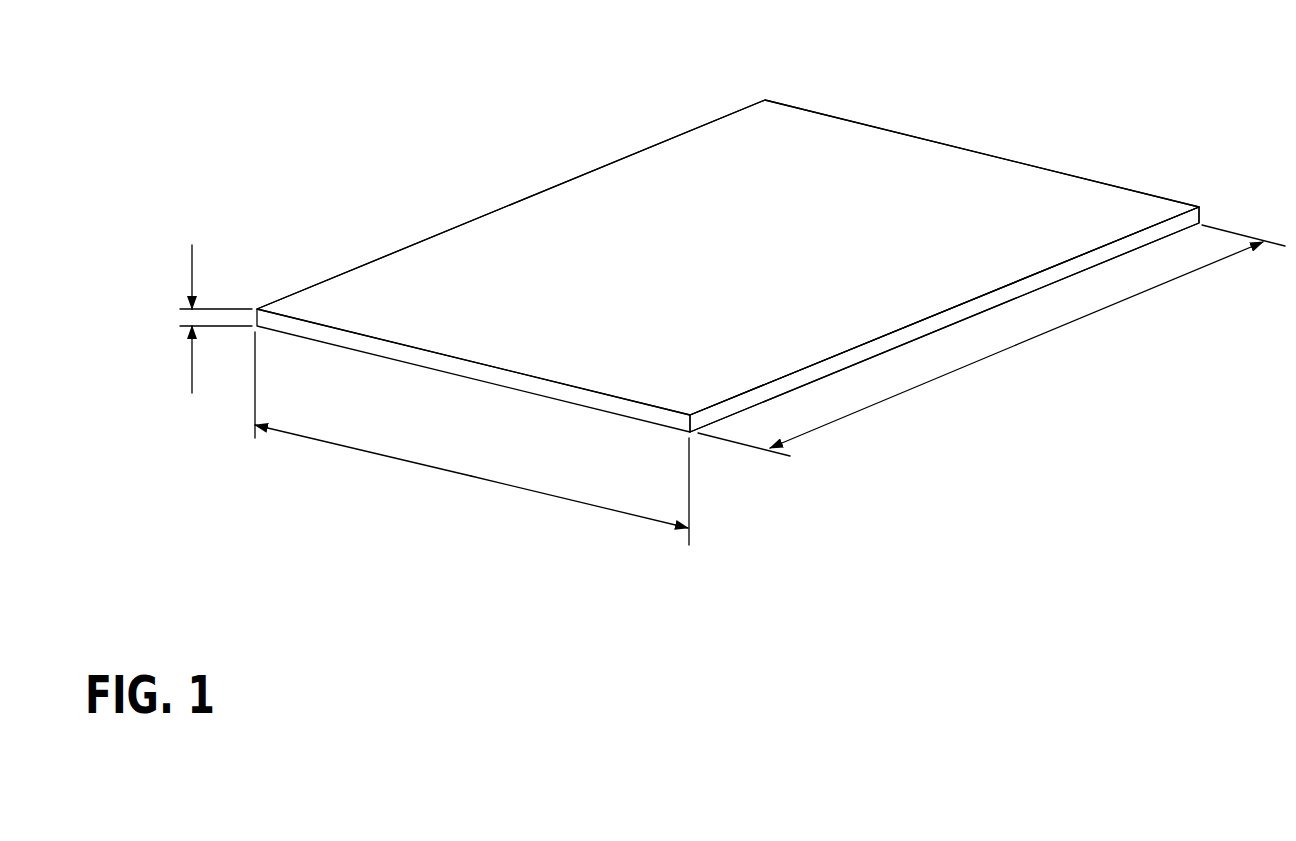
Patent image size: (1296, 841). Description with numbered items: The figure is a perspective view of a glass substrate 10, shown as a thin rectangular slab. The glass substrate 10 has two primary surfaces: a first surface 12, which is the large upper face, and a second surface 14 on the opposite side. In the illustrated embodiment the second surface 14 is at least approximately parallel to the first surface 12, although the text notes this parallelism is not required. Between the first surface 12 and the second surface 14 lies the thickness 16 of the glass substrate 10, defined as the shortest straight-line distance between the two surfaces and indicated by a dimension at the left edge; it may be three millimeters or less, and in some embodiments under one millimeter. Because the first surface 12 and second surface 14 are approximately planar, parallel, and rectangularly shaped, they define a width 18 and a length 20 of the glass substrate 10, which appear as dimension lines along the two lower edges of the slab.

The glass substrate 10 is at (383, 220).
The first surface 12 is at (665, 226).
The second surface 14 is at (1040, 290).
The thickness 16 is at (192, 363).
The width 18 is at (407, 462).
The length 20 is at (942, 374).